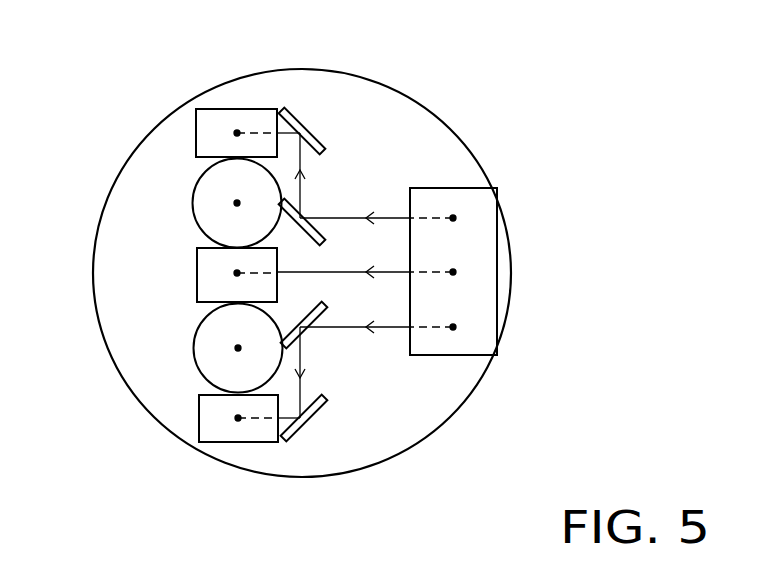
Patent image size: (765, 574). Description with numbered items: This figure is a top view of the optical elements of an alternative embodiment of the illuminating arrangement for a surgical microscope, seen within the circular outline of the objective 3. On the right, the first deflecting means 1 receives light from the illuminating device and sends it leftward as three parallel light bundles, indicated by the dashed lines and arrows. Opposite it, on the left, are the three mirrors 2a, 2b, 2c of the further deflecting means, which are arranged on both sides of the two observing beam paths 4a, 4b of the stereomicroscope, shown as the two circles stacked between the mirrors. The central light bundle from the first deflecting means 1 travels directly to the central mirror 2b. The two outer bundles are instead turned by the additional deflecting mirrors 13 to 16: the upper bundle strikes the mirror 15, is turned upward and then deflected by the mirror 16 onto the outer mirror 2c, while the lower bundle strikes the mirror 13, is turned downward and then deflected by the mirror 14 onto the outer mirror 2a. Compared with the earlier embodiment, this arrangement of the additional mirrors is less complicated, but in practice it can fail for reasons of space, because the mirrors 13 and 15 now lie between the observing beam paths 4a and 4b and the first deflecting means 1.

The first deflecting means 1 is at (473, 241).
The mirror 2a is at (208, 418).
The central mirror 2b is at (208, 272).
The mirror 2c is at (205, 140).
The objective 3 is at (387, 106).
The observing beam path 4a is at (238, 348).
The observing beam path 4b is at (236, 203).
The additional deflecting mirror 13 is at (320, 317).
The additional deflecting mirror 14 is at (301, 437).
The additional deflecting mirror 15 is at (316, 223).
The additional deflecting mirror 16 is at (301, 117).